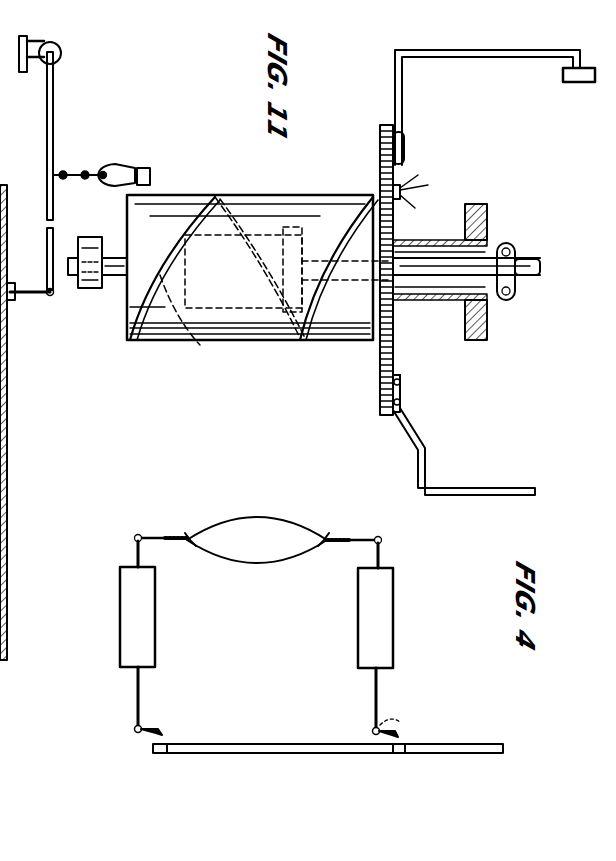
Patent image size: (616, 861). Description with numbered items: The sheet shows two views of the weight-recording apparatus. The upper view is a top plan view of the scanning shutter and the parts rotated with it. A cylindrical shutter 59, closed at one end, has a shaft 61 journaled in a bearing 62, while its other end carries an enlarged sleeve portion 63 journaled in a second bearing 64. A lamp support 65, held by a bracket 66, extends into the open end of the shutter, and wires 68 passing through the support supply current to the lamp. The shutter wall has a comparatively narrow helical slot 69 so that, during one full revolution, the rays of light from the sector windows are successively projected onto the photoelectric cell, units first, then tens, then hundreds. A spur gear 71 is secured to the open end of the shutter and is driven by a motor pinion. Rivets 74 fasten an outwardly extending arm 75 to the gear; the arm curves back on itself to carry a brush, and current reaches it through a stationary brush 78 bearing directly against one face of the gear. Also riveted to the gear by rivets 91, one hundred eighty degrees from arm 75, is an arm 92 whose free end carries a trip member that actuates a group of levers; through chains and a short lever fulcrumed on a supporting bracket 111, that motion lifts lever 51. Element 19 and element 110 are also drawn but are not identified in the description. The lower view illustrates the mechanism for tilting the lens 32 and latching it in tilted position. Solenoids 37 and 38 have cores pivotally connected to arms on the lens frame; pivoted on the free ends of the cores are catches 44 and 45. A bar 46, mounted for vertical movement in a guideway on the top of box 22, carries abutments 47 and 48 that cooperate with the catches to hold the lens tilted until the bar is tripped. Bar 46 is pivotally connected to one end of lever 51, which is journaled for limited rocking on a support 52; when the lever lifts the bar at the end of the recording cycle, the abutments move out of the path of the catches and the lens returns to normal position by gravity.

In FIG. 11, the rotatable drum 19 is at (190, 342).
In FIG. 11, the box 22 is at (7, 520).
In FIG. 4, the lens 32 is at (262, 552).
In FIG. 4, the solenoid 37 is at (360, 634).
In FIG. 4, the solenoid 38 is at (153, 632).
In FIG. 4, the catch 44 is at (398, 728).
In FIG. 4, the catch 45 is at (163, 727).
In FIG. 4, the bar 46 is at (260, 755).
In FIG. 4, the abutment 47 is at (400, 755).
In FIG. 4, the abutment 48 is at (158, 755).
In FIG. 11, the lever 51 is at (47, 145).
In FIG. 11, the support 52 is at (62, 58).
In FIG. 11, the cylindrical shutter 59 is at (210, 342).
In FIG. 11, the shaft 61 is at (110, 278).
In FIG. 11, the bearing 62 is at (92, 290).
In FIG. 11, the enlarged sleeve portion 63 is at (405, 302).
In FIG. 11, the second bearing 64 is at (478, 341).
In FIG. 11, the lamp support 65 is at (425, 280).
In FIG. 11, the bracket 66 is at (515, 255).
In FIG. 11, the wires 68 is at (530, 277).
In FIG. 11, the helical slot 69 is at (330, 290).
In FIG. 11, the spur gear 71 is at (380, 140).
In FIG. 11, the rivets 74 is at (404, 140).
In FIG. 11, the arm 75 is at (470, 57).
In FIG. 11, the stationary brush 78 is at (402, 200).
In FIG. 11, the rivets 91 is at (402, 390).
In FIG. 11, the arm 92 is at (430, 497).
In FIG. 11, the knob 110 is at (124, 165).
In FIG. 11, the supporting bracket 111 is at (75, 174).